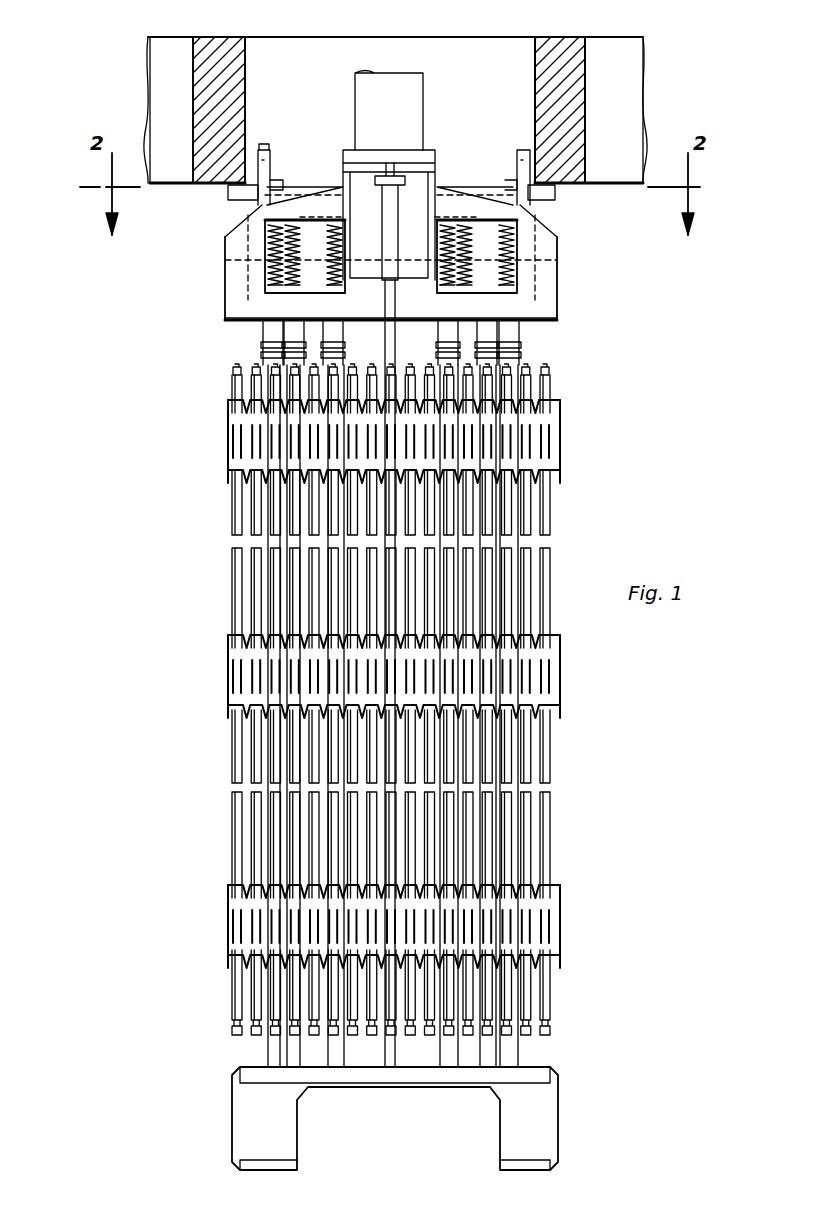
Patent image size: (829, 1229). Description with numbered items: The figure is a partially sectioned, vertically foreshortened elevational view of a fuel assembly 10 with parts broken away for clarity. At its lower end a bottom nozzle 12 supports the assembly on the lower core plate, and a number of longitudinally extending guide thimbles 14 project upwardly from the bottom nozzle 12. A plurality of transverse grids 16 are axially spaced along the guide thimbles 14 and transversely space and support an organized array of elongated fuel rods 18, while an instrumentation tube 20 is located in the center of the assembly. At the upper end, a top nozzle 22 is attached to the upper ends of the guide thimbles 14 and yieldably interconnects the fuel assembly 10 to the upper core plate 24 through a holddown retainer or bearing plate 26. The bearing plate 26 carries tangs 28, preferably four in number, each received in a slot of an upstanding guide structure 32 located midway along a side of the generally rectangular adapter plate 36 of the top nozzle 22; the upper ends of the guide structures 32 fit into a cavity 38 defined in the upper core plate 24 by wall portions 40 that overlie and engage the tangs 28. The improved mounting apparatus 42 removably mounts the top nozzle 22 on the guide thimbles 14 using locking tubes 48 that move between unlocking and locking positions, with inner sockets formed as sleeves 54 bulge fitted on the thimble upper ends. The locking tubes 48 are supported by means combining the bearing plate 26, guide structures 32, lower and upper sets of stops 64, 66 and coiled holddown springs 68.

The fuel assembly 10 is at (568, 428).
The bottom nozzle 12 is at (550, 1100).
The guide thimbles 14 is at (272, 1055).
The transverse grids 16 is at (562, 453).
The fuel rods 18 is at (258, 388).
The instrumentation tube 20 is at (395, 1085).
The top nozzle 22 is at (560, 292).
The upper core plate 24 is at (602, 36).
The bearing plate 26 is at (478, 185).
The tangs 28 is at (230, 195).
The guide structures 32 is at (272, 164).
The adapter plate 36 is at (247, 310).
The cavity 38 is at (250, 58).
The wall portions 40 is at (194, 66).
The mounting apparatus 42 is at (454, 182).
The locking tubes 48 is at (320, 272).
The sleeve 54 is at (267, 333).
The lower stops 64 is at (283, 182).
The upper stops 66 is at (264, 144).
The coiled holddown springs 68 is at (474, 272).